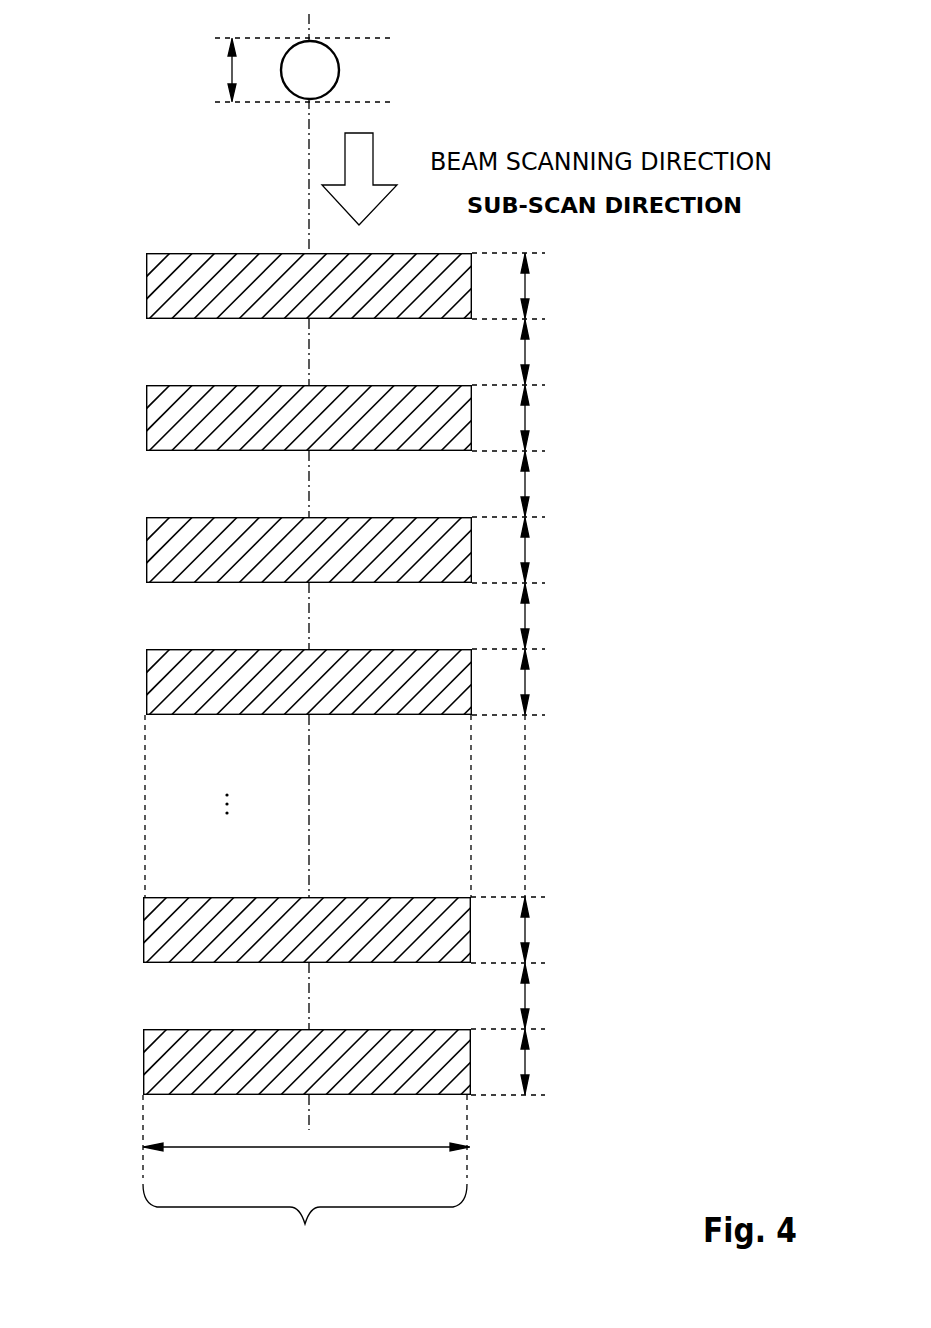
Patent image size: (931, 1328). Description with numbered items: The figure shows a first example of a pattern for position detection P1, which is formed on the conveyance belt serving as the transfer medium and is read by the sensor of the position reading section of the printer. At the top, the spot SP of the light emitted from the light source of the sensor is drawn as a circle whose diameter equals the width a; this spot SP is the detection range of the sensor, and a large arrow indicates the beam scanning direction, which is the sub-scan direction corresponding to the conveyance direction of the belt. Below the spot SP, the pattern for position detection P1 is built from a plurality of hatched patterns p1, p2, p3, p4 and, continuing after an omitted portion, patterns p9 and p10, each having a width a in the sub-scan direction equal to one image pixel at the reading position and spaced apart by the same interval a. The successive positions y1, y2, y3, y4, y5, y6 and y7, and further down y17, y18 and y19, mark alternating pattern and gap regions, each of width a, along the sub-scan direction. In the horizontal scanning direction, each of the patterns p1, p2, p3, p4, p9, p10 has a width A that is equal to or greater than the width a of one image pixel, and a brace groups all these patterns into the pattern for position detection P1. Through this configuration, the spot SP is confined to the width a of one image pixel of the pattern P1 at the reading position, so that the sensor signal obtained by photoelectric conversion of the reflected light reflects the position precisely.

The spot SP is at (340, 62).
The width a is at (359, 554).
The pattern p1 is at (145, 286).
The pattern p2 is at (145, 418).
The pattern p3 is at (145, 550).
The pattern p4 is at (145, 682).
The pattern p9 is at (143, 930).
The pattern p10 is at (143, 1062).
The sub-scan position y1 is at (544, 286).
The sub-scan position y2 is at (544, 352).
The sub-scan position y3 is at (544, 418).
The sub-scan position y4 is at (544, 484).
The sub-scan position y5 is at (544, 550).
The sub-scan position y6 is at (544, 616).
The sub-scan position y7 is at (544, 682).
The sub-scan position y17 is at (550, 930).
The sub-scan position y18 is at (550, 996).
The sub-scan position y19 is at (550, 1062).
The width in the horizontal scanning direction A is at (306, 1163).
The pattern for position detection P1 is at (305, 1224).